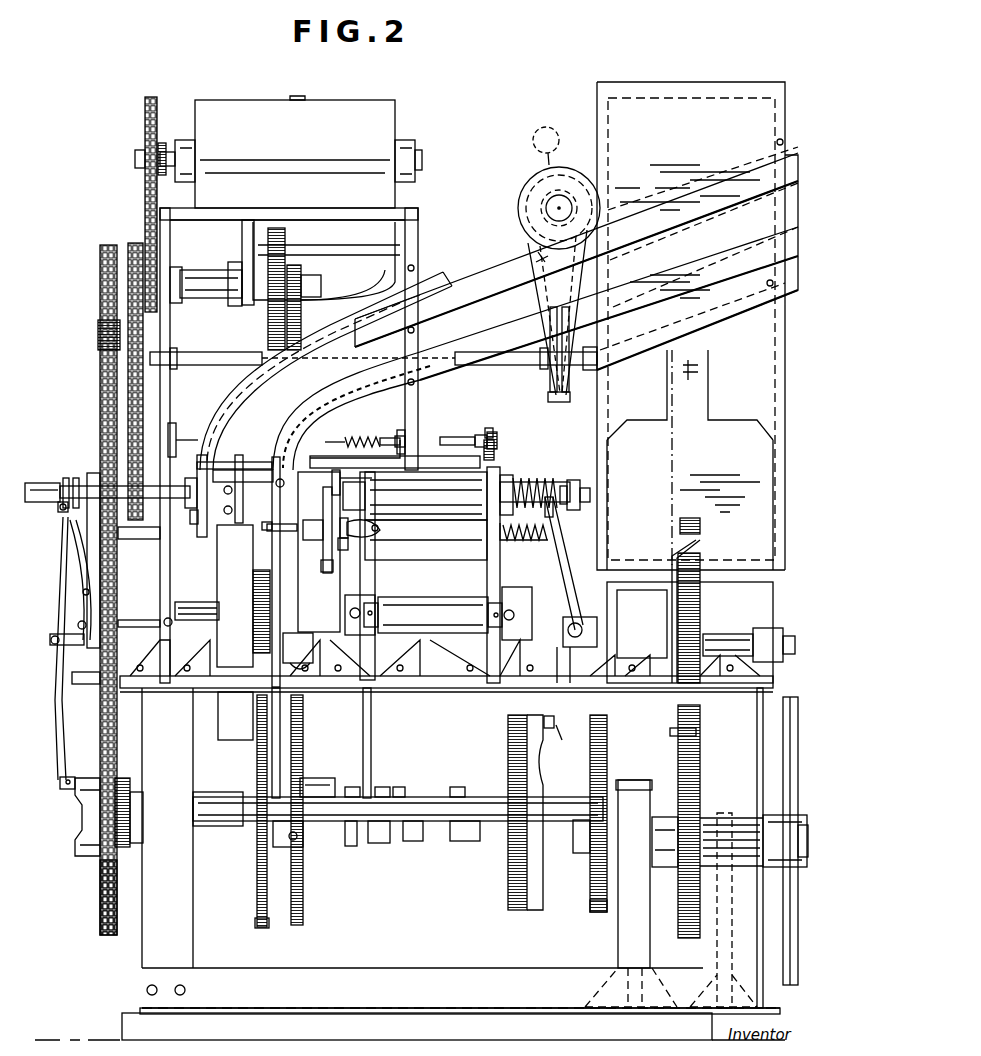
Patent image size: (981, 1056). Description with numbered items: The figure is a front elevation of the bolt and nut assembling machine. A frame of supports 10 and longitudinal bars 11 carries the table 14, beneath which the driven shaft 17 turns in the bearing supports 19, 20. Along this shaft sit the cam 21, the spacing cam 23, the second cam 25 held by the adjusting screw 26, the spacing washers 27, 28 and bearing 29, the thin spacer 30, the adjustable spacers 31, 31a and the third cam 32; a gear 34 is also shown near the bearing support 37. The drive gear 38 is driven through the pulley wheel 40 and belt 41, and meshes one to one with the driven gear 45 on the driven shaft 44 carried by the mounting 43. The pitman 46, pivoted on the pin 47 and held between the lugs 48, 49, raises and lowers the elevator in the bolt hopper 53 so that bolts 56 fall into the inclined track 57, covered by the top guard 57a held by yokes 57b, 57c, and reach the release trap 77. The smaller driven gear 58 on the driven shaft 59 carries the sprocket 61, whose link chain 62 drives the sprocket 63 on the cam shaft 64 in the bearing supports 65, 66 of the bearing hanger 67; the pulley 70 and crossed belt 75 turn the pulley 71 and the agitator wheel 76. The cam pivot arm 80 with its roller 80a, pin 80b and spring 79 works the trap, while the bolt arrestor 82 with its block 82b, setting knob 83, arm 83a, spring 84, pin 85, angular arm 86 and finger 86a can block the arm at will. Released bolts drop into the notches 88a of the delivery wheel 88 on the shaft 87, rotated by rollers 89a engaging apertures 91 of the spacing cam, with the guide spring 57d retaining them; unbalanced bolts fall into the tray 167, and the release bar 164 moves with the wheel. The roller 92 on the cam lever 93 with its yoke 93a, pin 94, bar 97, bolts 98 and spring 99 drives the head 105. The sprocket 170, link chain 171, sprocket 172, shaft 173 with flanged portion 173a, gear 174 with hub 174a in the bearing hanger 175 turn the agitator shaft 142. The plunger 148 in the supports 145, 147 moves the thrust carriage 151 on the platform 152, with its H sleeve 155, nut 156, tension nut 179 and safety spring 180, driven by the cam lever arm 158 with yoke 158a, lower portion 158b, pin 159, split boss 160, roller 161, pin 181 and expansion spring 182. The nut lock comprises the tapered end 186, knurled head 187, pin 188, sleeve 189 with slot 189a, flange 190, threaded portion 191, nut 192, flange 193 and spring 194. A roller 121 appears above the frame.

The support 10 is at (193, 935).
The longitudinal bar 11 is at (326, 975).
The table 14 is at (424, 690).
The driven shaft 17 is at (222, 830).
The bearing support 19 is at (372, 740).
The bearing support 20 is at (575, 762).
The cam 21 is at (80, 817).
The spacing cam 23 is at (257, 882).
The second cam 25 is at (303, 900).
The adjusting screw 26 is at (318, 778).
The spacing washer 27 is at (348, 787).
The spacing washer 28 is at (352, 846).
The bearing 29 is at (378, 843).
The thin spacer 30 is at (383, 787).
The adjustable spacer 31 is at (399, 787).
The adjustable spacer 31a is at (456, 787).
The third cam 32 is at (508, 745).
The gear 34 is at (605, 914).
The bearing support 37 is at (630, 790).
The drive gear 38 is at (690, 935).
The pulley wheel 40 is at (787, 754).
The belt 41 is at (790, 716).
The mounting 43 is at (773, 610).
The driven shaft 44 is at (742, 640).
The driven gear 45 is at (700, 607).
The pitman 46 is at (672, 617).
The pin 47 is at (670, 735).
The lug 48 is at (692, 520).
The lug 49 is at (703, 548).
The bolt hopper 53 is at (770, 335).
The bolt 56 is at (537, 263).
The inclined track 57 is at (495, 305).
The top guard 57a is at (370, 313).
The yoke 57b is at (435, 282).
The yoke 57c is at (200, 460).
The guide spring 57d is at (202, 530).
The driven gear 58 is at (595, 876).
The driven shaft 59 is at (428, 810).
The sprocket 61 is at (125, 778).
The link chain 62 is at (100, 880).
The sprocket 63 is at (118, 330).
The cam shaft 64 is at (232, 357).
The bearing support 65 is at (165, 225).
The bearing support 66 is at (418, 245).
The bearing hanger 67 is at (405, 215).
The pulley 70 is at (551, 399).
The pulley 71 is at (546, 146).
The crossed belt 75 is at (530, 248).
The agitator wheel 76 is at (520, 183).
The release trap 77 is at (198, 509).
The spring 79 is at (281, 742).
The cam pivot arm 80 is at (280, 625).
The roller 80a is at (290, 850).
The pin 80b is at (300, 658).
The bolt arrestor 82 is at (325, 572).
The bolt arrestor block 82b is at (313, 520).
The setting knob 83 is at (378, 535).
The arm 83a is at (347, 552).
The spring 84 is at (290, 532).
The pin 85 is at (330, 548).
The angular arm 86 is at (283, 520).
The finger 86a is at (266, 531).
The shaft 87 is at (438, 612).
The delivery wheel 88 is at (218, 583).
The notch 88a is at (197, 611).
The roller 89a is at (262, 582).
The aperture 91 is at (256, 925).
The roller 92 is at (70, 777).
The cam lever 93 is at (57, 600).
The yoke 93a is at (60, 512).
The pin 94 is at (50, 647).
The bar 97 is at (140, 540).
The bolt 98 is at (82, 630).
The spring 99 is at (74, 572).
The head 105 is at (30, 482).
The roller 121 is at (212, 100).
The agitator shaft 142 is at (135, 160).
The support 145 is at (375, 582).
The support 147 is at (480, 550).
The reciprocating plunger 148 is at (575, 505).
The thrust carriage 151 is at (345, 472).
The angular platform 152 is at (378, 528).
The H sleeve 155 is at (570, 480).
The nut 156 is at (582, 488).
The cam lever arm 158 is at (572, 585).
The upper yoke portion 158a is at (554, 540).
The lower portion 158b is at (555, 738).
The pin 159 is at (570, 636).
The split boss 160 is at (582, 622).
The roller 161 is at (548, 716).
The release bar 164 is at (452, 500).
The tray 167 is at (85, 686).
The sprocket 170 is at (162, 143).
The link chain 171 is at (145, 130).
The sprocket 172 is at (162, 300).
The shaft 173 is at (190, 280).
The flanged center portion 173a is at (230, 270).
The gear 174 is at (285, 236).
The gear hub 174a is at (263, 300).
The bearing hanger 175 is at (248, 232).
The tension nut 179 is at (506, 476).
The safety spring 180 is at (540, 480).
The pin 181 is at (520, 540).
The expansion spring 182 is at (505, 540).
The tapered end 186 is at (312, 450).
The knurled head 187 is at (494, 428).
The pin 188 is at (496, 446).
The sleeve 189 is at (448, 437).
The slot 189a is at (480, 434).
The flange 190 is at (428, 440).
The threaded portion 191 is at (392, 429).
The nut 192 is at (401, 430).
The flange 193 is at (331, 434).
The spring 194 is at (360, 433).